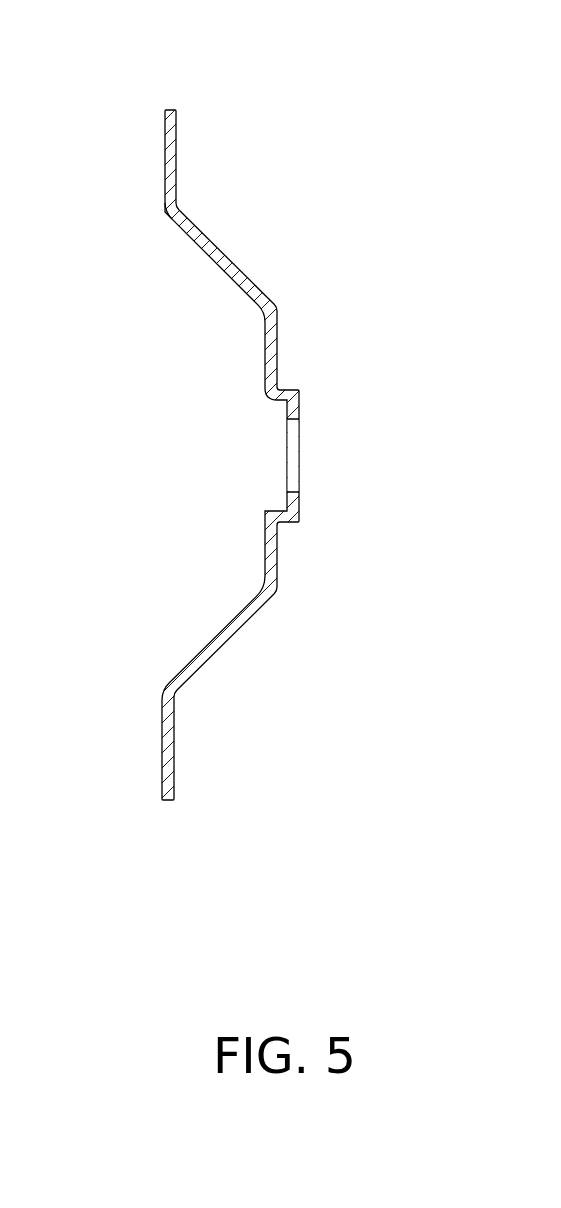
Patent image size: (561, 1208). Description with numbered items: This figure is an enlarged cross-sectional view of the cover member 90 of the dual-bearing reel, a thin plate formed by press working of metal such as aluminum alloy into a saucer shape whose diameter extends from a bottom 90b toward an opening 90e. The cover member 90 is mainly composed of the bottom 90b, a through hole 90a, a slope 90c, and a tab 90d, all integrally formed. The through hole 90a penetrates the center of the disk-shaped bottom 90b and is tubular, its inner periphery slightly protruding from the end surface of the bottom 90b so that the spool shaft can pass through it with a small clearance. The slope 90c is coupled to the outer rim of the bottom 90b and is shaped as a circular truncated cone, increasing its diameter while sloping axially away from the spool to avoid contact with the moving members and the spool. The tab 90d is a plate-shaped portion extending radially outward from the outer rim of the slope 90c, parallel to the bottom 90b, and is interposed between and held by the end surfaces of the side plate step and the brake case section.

The cover member 90 is at (345, 135).
The through hole 90a is at (298, 402).
The bottom 90b is at (275, 362).
The slope 90c is at (239, 276).
The tab 90d is at (172, 150).
The opening 90e is at (162, 230).